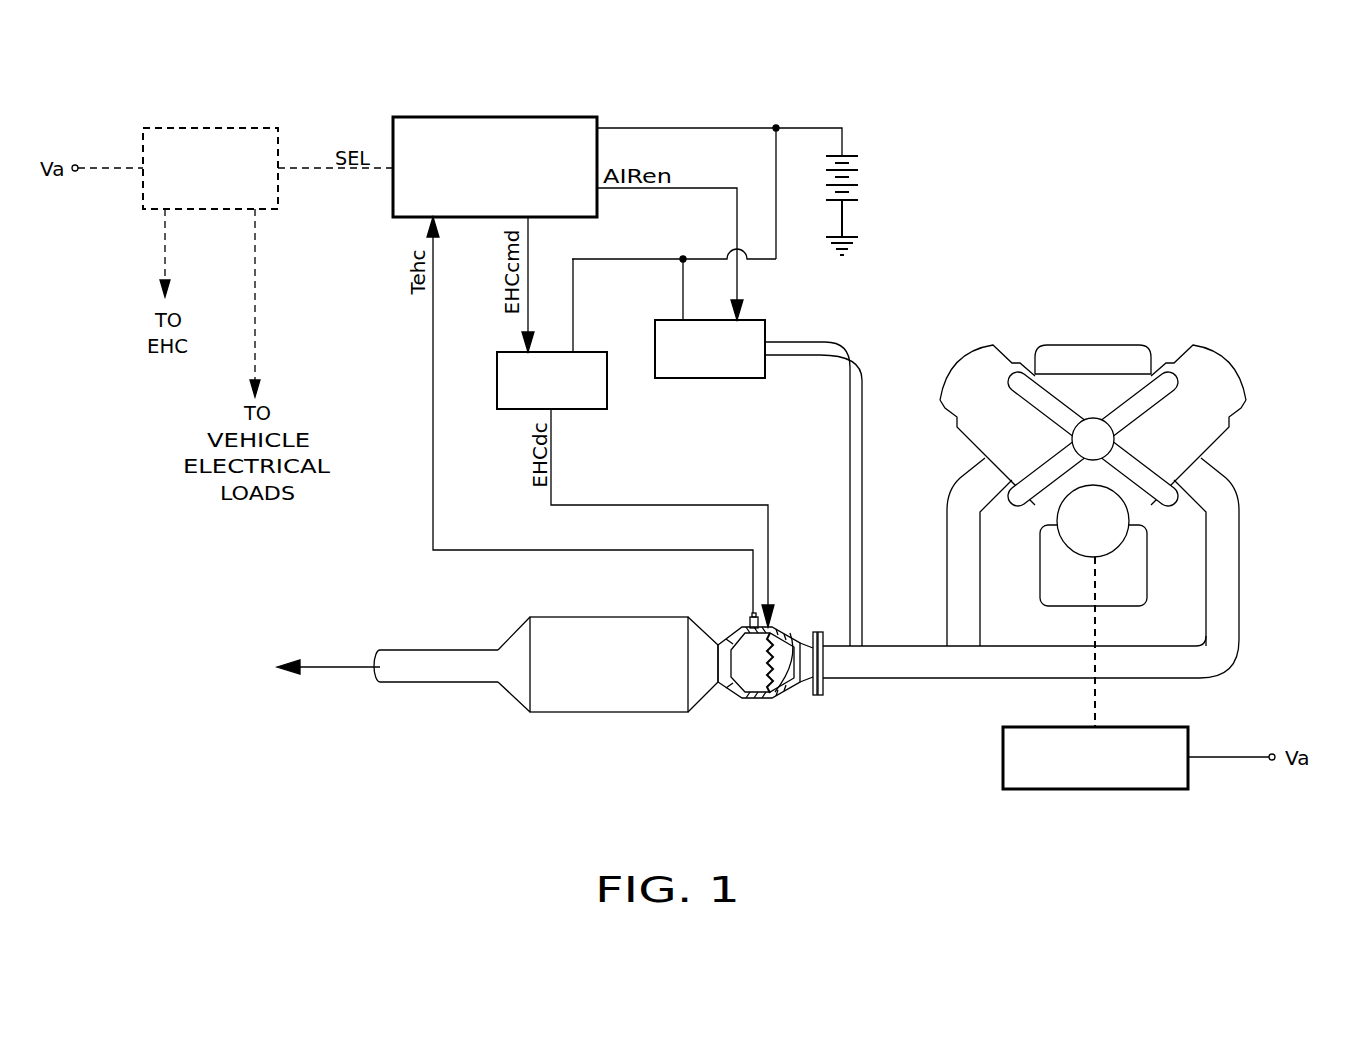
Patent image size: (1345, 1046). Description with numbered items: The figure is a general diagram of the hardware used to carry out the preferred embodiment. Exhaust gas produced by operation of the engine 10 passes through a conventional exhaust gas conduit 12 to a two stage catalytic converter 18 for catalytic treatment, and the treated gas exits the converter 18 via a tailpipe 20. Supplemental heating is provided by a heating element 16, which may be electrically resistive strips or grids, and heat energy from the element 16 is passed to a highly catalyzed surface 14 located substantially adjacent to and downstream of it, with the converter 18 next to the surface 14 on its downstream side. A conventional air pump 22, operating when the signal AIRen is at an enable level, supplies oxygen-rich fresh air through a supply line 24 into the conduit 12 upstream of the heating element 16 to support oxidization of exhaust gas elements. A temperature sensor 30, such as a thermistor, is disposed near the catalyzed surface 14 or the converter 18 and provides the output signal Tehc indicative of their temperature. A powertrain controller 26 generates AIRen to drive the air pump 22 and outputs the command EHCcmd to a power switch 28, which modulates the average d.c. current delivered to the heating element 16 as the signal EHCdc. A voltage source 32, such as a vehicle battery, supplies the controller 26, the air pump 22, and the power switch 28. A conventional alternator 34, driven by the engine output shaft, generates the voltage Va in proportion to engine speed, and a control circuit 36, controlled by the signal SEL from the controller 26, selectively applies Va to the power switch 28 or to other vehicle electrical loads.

The engine 10 is at (1086, 345).
The exhaust gas conduit 12 is at (953, 670).
The highly catalyzed surface 14 is at (733, 680).
The heating element 16 is at (773, 675).
The two stage catalytic converter 18 is at (640, 692).
The tailpipe 20 is at (450, 668).
The air pump 22 is at (738, 378).
The air supply pipe 24 is at (858, 372).
The powertrain controller 26 is at (540, 123).
The power switch 28 is at (510, 409).
The temperature sensor 30 is at (747, 622).
The voltage source 32 is at (847, 155).
The alternator 34 is at (1088, 778).
The control circuit 36 is at (213, 128).